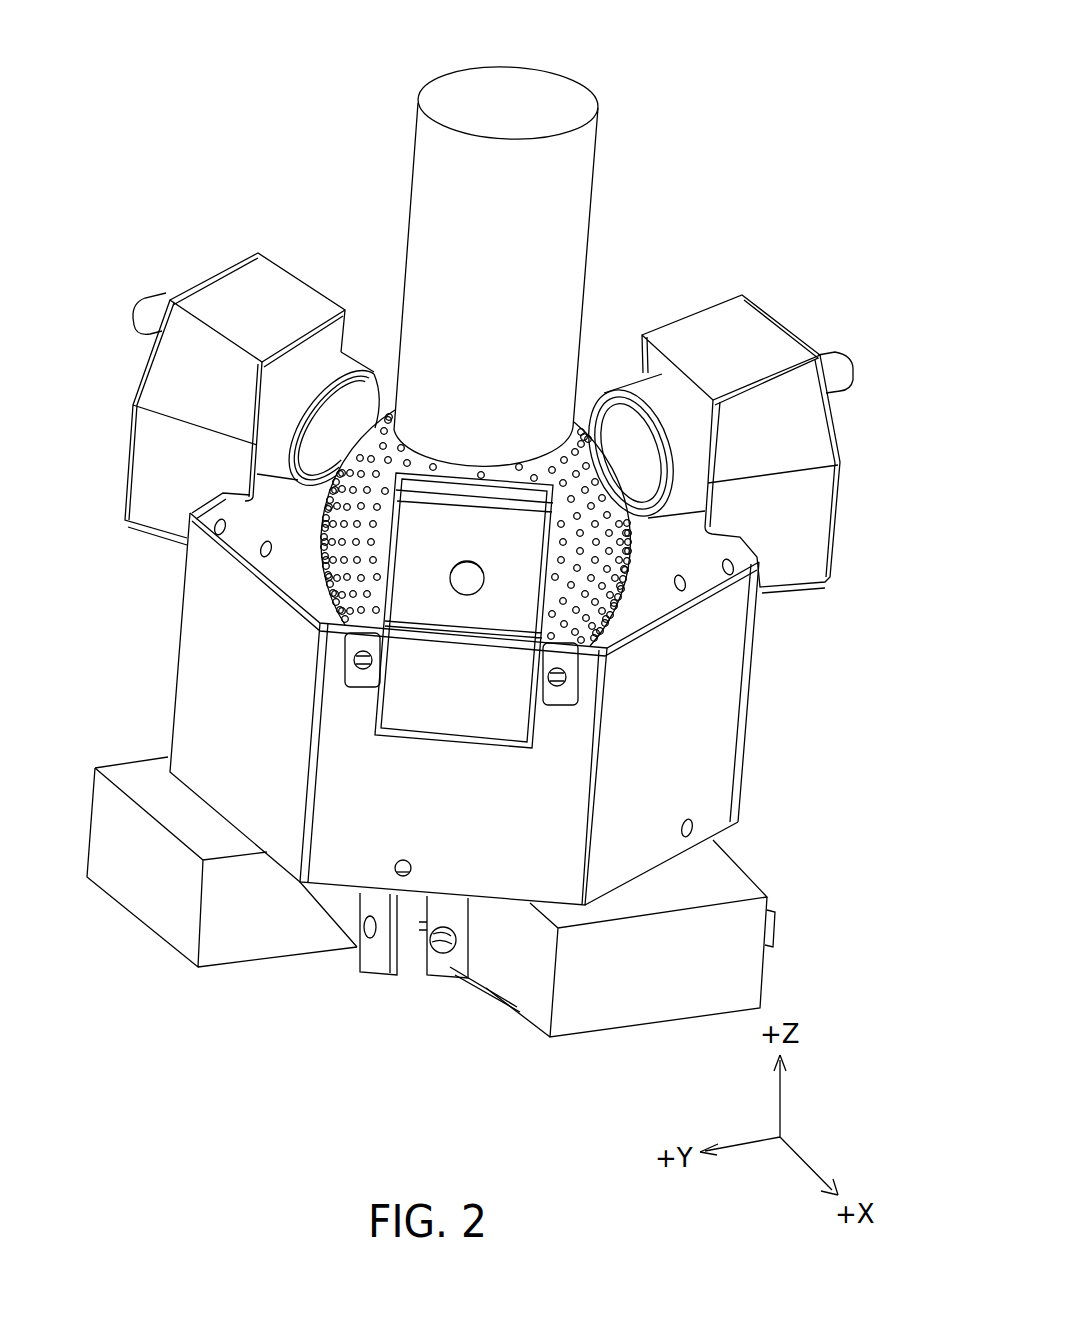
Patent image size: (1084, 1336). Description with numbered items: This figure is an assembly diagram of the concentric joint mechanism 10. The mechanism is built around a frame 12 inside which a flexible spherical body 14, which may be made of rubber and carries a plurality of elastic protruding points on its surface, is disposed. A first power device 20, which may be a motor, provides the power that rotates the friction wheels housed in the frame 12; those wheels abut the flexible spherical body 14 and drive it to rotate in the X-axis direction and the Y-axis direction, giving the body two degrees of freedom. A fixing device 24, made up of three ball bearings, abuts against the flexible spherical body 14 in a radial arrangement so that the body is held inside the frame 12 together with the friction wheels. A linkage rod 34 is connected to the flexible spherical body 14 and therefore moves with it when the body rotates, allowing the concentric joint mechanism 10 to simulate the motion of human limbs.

The concentric joint mechanism 10 is at (698, 88).
The frame 12 is at (727, 700).
The flexible spherical body 14 is at (379, 415).
The first power device 20 is at (677, 968).
The fixing device 24 is at (792, 285).
The linkage rod 34 is at (550, 230).